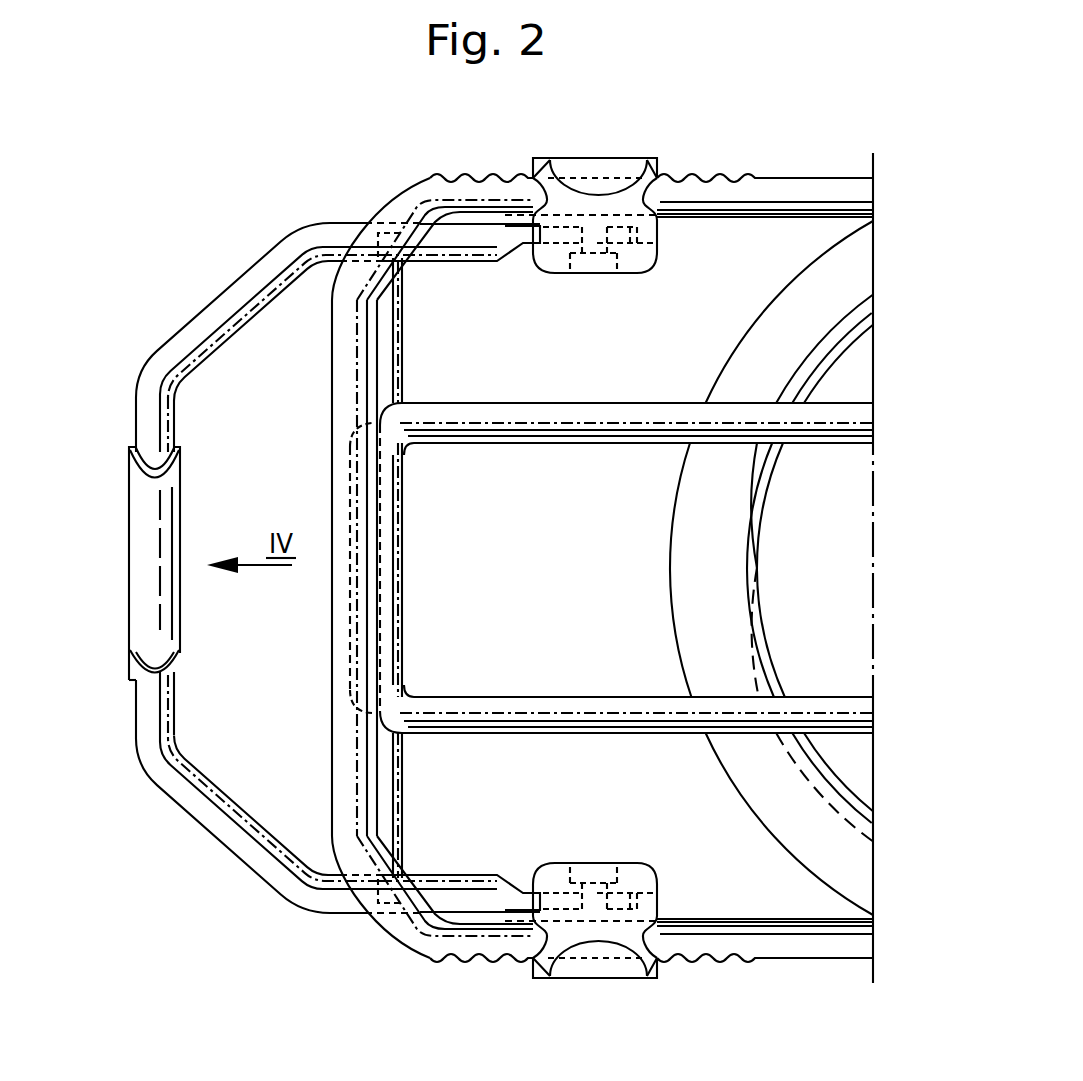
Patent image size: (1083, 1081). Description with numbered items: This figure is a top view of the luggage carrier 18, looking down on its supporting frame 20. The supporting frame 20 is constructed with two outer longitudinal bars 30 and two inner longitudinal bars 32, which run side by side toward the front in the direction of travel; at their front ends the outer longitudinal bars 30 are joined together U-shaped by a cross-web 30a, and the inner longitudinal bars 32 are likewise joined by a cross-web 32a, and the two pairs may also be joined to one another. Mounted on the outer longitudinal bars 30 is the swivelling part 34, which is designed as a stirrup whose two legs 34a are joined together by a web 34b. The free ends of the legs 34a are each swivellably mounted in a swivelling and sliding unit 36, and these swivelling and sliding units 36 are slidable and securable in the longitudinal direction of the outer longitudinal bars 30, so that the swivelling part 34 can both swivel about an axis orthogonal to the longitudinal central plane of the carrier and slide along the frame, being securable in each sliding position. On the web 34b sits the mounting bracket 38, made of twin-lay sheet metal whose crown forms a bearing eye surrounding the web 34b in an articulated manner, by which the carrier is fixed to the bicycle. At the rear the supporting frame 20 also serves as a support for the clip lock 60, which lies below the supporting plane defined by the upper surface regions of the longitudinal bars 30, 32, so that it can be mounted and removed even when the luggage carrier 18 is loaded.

The luggage carrier 18 is at (711, 156).
The supporting frame 20 is at (497, 185).
The outer longitudinal bars 30 is at (808, 185).
The cross-web 30a is at (340, 407).
The inner longitudinal bars 32 is at (627, 430).
The cross-web 32a is at (386, 553).
The swivelling part 34 is at (254, 272).
The legs 34a is at (378, 212).
The web 34b is at (146, 421).
The swivelling and sliding unit 36 is at (642, 262).
The mounting bracket 38 is at (130, 552).
The clip lock 60 is at (673, 563).